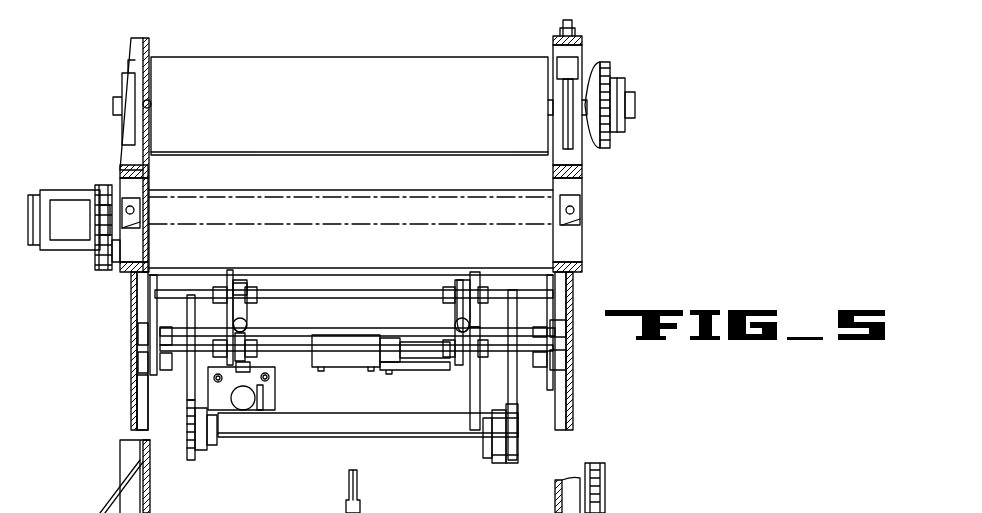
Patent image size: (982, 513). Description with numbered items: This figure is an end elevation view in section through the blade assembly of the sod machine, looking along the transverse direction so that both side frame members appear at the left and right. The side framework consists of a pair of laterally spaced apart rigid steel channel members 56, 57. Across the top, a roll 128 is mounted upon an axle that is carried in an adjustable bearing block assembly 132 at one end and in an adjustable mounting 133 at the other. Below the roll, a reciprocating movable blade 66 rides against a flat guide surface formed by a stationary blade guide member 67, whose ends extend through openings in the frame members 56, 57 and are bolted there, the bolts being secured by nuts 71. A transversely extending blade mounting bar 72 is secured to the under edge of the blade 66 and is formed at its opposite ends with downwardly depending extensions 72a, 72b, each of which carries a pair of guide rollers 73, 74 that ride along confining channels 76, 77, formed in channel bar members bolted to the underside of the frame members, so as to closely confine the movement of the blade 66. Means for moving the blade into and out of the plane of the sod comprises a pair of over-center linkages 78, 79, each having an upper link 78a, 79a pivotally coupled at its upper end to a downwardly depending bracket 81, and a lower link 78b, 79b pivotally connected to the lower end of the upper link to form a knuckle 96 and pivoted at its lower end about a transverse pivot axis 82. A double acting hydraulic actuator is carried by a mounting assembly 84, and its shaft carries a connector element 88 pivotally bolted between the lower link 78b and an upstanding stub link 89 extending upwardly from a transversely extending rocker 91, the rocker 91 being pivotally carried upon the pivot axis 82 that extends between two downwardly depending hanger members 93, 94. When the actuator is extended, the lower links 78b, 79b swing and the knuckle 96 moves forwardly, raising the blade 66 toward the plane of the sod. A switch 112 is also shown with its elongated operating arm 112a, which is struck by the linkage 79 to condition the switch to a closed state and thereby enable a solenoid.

The roll 128 is at (348, 113).
The rigid steel frame member 57 is at (145, 186).
The nuts 71 is at (132, 218).
The rigid steel frame member 56 is at (580, 252).
The adjustable bearing block assembly 132 is at (568, 73).
The adjustable mounting 133 is at (151, 104).
The reciprocating movable blade 66 is at (405, 190).
The stationary blade guide member 67 is at (273, 198).
The downwardly depending bracket 81 is at (220, 272).
The downwardly depending extension 72a is at (157, 310).
The blade mounting bar 72 is at (207, 270).
The over-center linkage 78 is at (255, 330).
The upper link 78a is at (250, 326).
The knuckle 96 is at (312, 345).
The over-center linkage 79 is at (455, 325).
The upper link 79a is at (452, 322).
The lower link 78b is at (190, 385).
The guide rollers 73 is at (140, 365).
The confining channel 76 is at (143, 408).
The switch 112 is at (366, 364).
The elongated operating arm 112a is at (452, 364).
The mounting assembly 84 is at (278, 388).
The upstanding stub link 89 is at (256, 410).
The connector element 88 is at (243, 412).
The rocker 91 is at (390, 427).
The lower link 79b is at (474, 393).
The pivot axis 82 is at (480, 435).
The hanger member 93 is at (190, 458).
The hanger member 94 is at (520, 446).
The downwardly depending extension 72b is at (556, 300).
The confining channel 77 is at (576, 400).
The guide rollers 74 is at (576, 363).